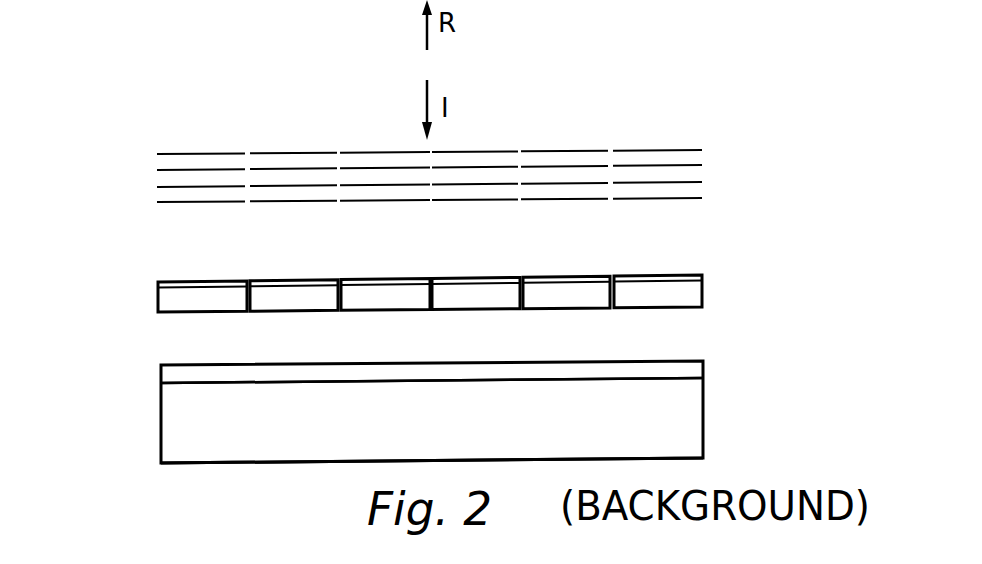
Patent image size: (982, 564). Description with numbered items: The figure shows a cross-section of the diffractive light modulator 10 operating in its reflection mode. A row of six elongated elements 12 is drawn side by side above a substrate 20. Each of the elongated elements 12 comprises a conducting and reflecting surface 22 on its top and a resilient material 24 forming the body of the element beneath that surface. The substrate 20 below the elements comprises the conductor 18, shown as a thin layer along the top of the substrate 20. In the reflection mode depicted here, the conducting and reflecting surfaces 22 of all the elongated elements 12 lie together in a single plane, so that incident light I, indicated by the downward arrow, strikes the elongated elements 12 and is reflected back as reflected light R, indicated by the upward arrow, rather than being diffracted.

The diffractive light modulator 10 is at (666, 128).
The elongated elements 12 is at (158, 307).
The conducting and reflecting surface 22 is at (293, 281).
The resilient material 24 is at (433, 280).
The conductor 18 is at (705, 367).
The substrate 20 is at (438, 430).